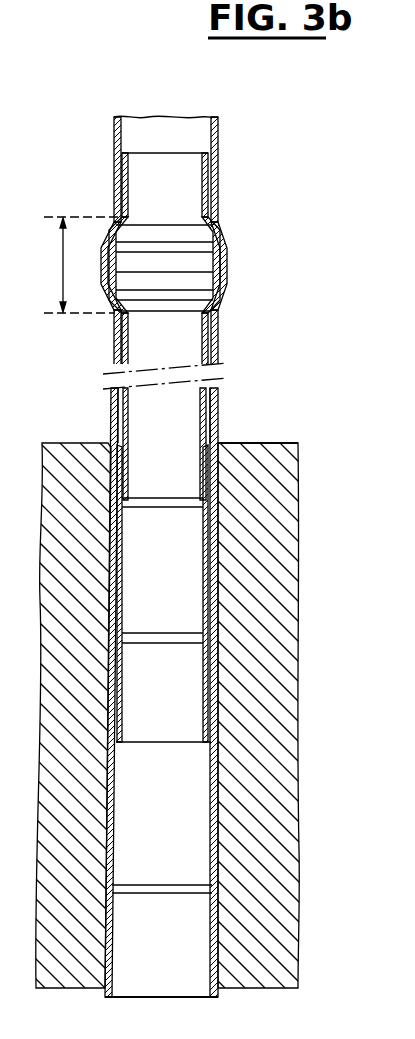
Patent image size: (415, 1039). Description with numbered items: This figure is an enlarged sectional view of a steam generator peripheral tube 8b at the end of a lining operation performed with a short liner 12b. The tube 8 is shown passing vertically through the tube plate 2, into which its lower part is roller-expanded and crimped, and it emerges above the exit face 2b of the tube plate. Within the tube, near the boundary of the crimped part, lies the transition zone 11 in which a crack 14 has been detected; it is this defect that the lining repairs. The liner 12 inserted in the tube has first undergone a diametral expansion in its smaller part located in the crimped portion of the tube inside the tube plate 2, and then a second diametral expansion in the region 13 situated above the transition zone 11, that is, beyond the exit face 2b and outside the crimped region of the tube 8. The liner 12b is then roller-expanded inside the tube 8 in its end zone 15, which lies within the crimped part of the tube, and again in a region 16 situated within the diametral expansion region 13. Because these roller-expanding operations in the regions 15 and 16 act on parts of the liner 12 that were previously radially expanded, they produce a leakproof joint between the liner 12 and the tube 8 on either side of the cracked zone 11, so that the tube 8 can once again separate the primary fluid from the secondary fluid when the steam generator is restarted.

The tube 8 is at (218, 143).
The liner 12 is at (214, 218).
The diametral expansion region 13 is at (81, 265).
The roller-expanded region 16 is at (220, 268).
The exit face of the tube plate 2b is at (81, 443).
The transition zone 11 is at (205, 430).
The short liner 12b is at (215, 409).
The crack 14 is at (221, 440).
The peripheral tube 8b is at (213, 474).
The tube plate 2 is at (207, 715).
The end zone 15 is at (209, 692).